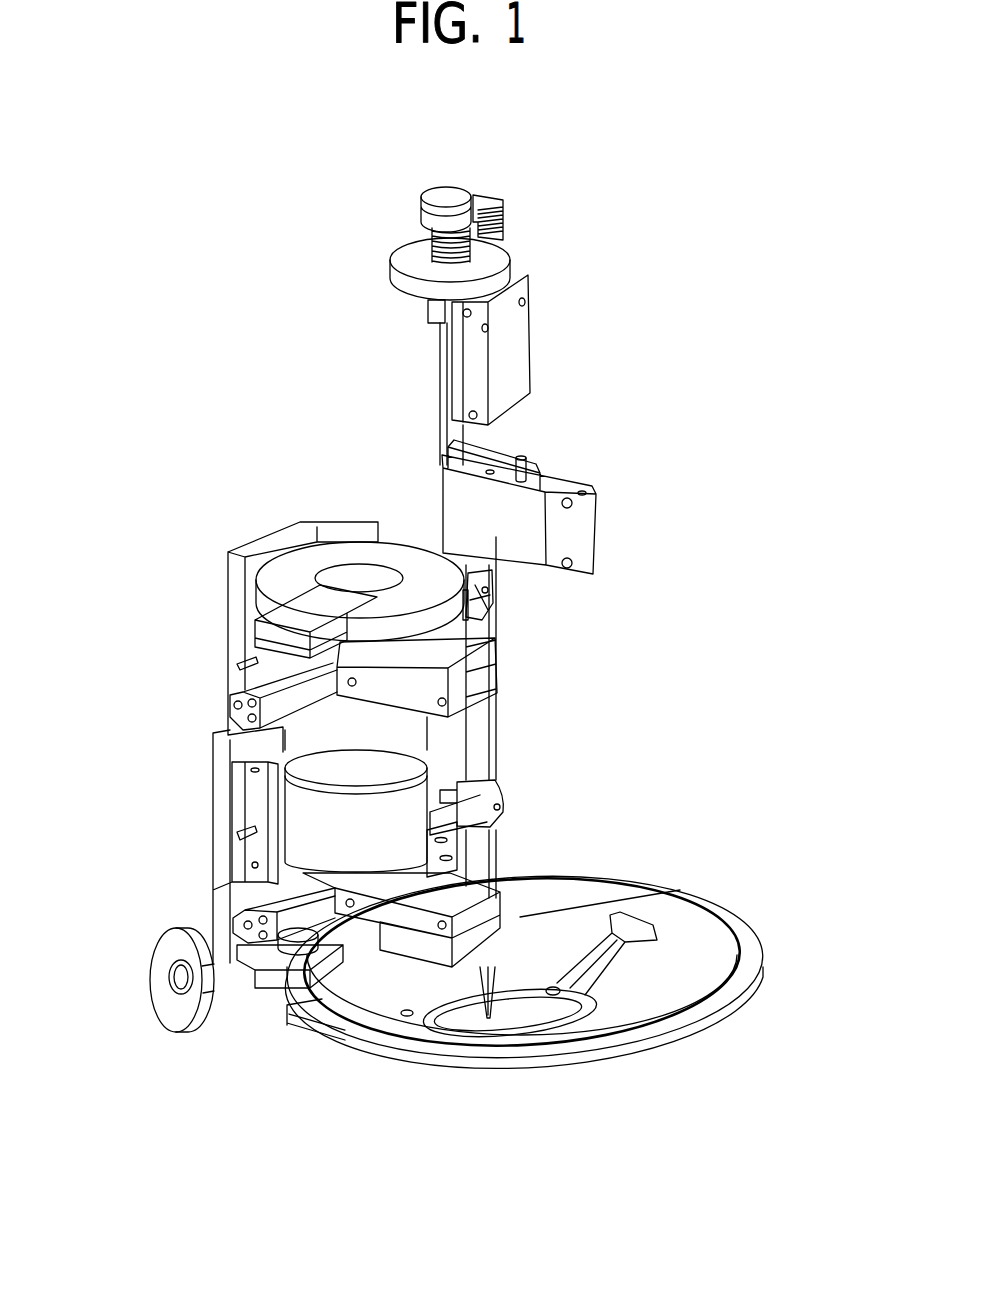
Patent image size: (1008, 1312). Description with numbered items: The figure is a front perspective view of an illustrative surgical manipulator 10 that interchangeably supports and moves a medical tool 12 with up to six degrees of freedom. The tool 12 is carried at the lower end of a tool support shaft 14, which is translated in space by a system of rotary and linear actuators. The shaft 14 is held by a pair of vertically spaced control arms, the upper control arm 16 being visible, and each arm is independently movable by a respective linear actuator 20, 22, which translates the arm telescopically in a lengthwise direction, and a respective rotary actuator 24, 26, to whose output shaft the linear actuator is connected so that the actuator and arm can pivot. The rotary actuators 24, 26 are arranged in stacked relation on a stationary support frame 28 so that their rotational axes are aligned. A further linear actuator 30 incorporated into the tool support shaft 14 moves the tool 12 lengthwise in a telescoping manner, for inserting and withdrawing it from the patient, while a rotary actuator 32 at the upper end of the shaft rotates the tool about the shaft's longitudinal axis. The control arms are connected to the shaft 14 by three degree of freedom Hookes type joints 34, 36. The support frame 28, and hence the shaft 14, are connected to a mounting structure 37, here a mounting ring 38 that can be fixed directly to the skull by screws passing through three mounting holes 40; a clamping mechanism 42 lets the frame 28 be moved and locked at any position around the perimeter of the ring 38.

The surgical manipulator 10 is at (635, 378).
The medical tool 12 is at (520, 957).
The tool support shaft 14 is at (482, 740).
The control arm 16 is at (467, 825).
The linear actuator 20 is at (403, 942).
The linear actuator 22 is at (333, 745).
The rotary actuator 24 is at (320, 838).
The rotary actuator 26 is at (318, 760).
The stationary support frame 28 is at (237, 575).
The linear actuator 30 is at (570, 534).
The rotary actuator 32 is at (507, 270).
The Hookes type joint 34 is at (500, 790).
The Hookes type joint 36 is at (495, 606).
The mounting structure 37 is at (783, 1017).
The mounting ring 38 is at (678, 1017).
The mounting holes 40 is at (657, 943).
The clamping mechanism 42 is at (200, 987).